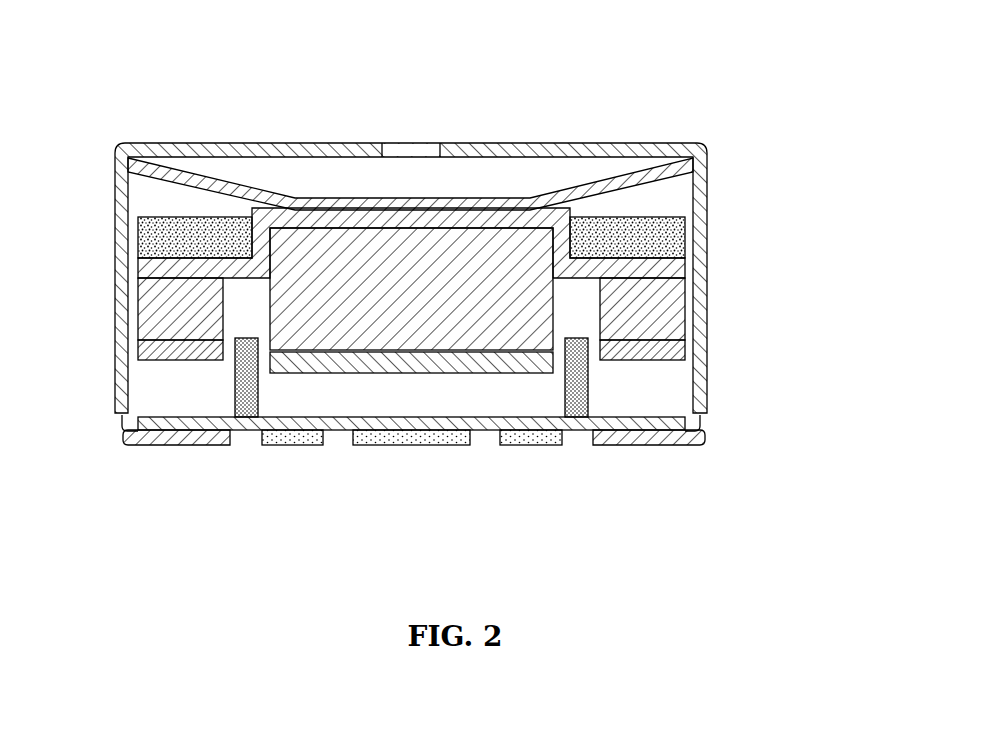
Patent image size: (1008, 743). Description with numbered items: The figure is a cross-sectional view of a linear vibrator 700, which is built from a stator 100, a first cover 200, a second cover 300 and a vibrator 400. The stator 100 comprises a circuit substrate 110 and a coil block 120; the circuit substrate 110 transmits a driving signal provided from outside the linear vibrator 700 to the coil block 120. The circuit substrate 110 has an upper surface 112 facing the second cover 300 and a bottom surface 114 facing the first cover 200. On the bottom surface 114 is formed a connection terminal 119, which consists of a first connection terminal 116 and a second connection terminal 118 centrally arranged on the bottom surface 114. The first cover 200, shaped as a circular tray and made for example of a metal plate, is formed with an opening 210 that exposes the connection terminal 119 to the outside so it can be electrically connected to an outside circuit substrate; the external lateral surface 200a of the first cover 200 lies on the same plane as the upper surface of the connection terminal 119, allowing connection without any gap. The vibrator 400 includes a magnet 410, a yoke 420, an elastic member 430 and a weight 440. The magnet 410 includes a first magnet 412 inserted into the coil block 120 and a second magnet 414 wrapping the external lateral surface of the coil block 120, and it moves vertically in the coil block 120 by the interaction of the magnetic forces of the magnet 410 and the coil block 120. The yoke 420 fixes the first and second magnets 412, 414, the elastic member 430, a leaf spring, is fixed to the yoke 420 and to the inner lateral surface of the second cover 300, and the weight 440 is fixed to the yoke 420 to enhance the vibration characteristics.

The linear vibrator 700 is at (684, 114).
The second cover 300 is at (702, 219).
The yoke 420 is at (557, 240).
The elastic member 430 is at (568, 188).
The weight 440 is at (137, 220).
The magnet 410 is at (492, 284).
The first magnet 412 is at (537, 307).
The second magnet 414 is at (663, 322).
The vibrator 400 is at (356, 256).
The stator 100 is at (455, 444).
The coil block 120 is at (587, 381).
The circuit substrate 110 is at (653, 417).
The upper surface 112 is at (163, 417).
The bottom surface 114 is at (150, 445).
The connection terminal 119 is at (457, 490).
The second connection terminal 118 is at (408, 445).
The first connection terminal 116 is at (531, 467).
The first cover 200 is at (474, 495).
The external lateral surface 200a is at (200, 445).
The opening 210 is at (573, 433).